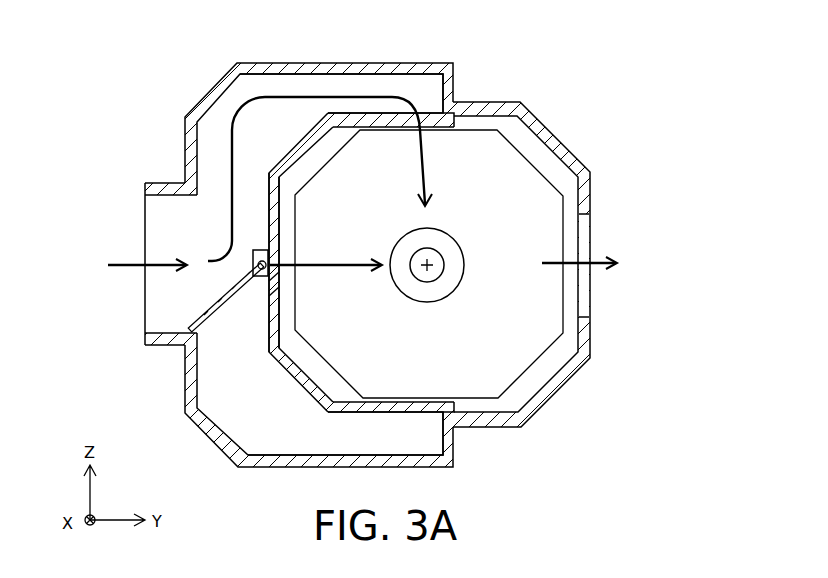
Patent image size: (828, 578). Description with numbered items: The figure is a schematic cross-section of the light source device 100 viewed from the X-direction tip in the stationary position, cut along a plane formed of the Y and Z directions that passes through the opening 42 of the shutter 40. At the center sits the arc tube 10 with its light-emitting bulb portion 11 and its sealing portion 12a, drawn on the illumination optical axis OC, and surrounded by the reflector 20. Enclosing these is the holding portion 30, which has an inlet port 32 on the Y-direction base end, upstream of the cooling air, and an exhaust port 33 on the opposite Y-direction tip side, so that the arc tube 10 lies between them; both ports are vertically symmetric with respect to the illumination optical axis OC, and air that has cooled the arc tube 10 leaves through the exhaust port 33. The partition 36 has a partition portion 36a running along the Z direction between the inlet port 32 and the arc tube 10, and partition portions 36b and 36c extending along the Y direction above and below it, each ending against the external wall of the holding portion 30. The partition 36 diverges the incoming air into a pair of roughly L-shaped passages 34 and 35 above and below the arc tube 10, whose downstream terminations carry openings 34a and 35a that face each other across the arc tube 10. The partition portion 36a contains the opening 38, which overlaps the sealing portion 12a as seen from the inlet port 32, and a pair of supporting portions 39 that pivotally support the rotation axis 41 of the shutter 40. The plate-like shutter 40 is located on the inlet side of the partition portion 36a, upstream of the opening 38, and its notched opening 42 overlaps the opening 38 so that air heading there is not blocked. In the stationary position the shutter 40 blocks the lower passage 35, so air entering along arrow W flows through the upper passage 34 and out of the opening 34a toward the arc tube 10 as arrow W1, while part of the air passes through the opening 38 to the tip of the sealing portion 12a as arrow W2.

The light source device 100 is at (697, 37).
The arc tube 10 is at (456, 327).
The bulb portion 11 is at (443, 230).
The sealing portion 12a is at (441, 279).
The illumination optical axis OC is at (434, 263).
The reflector 20 is at (534, 362).
The holding portion 30 is at (207, 95).
The inlet port 32 is at (155, 202).
The exhaust port 33 is at (591, 222).
The passage 34 is at (400, 82).
The opening 34a is at (437, 128).
The passage 35 is at (433, 432).
The opening 35a is at (397, 402).
The partition 36 is at (265, 391).
The partition portion 36a is at (267, 343).
The partition portion 36b is at (380, 118).
The partition portion 36c is at (360, 410).
The opening 38 is at (283, 291).
The supporting portions 39 is at (281, 277).
The shutter 40 is at (185, 280).
The rotation axis 41 is at (262, 244).
The opening 42 is at (252, 283).
The arrow W is at (112, 262).
The arrow W1 is at (246, 112).
The arrow W2 is at (334, 262).